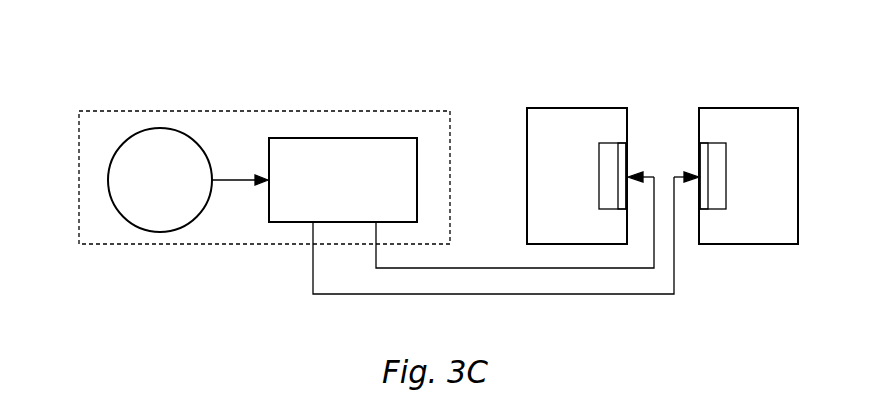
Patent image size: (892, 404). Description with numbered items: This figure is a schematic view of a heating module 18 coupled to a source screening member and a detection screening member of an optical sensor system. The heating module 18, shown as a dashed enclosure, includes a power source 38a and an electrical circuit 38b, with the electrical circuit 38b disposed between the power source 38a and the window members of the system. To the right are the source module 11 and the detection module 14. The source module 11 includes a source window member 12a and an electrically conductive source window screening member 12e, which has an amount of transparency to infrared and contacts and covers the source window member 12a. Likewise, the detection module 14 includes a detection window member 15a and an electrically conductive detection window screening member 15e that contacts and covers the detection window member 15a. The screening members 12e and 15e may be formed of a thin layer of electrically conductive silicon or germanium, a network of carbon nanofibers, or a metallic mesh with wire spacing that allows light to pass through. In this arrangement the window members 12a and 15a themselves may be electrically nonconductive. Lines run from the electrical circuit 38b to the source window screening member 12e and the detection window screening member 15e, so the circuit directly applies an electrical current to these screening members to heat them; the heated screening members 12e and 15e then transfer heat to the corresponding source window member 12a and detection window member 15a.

The heating module 18 is at (122, 111).
The power source 38a is at (168, 129).
The electrical circuit 38b is at (338, 138).
The source module 11 is at (546, 108).
The source window member 12a is at (608, 147).
The source window screening member 12e is at (622, 166).
The detection module 14 is at (764, 108).
The detection window member 15a is at (717, 148).
The detection window screening member 15e is at (702, 160).